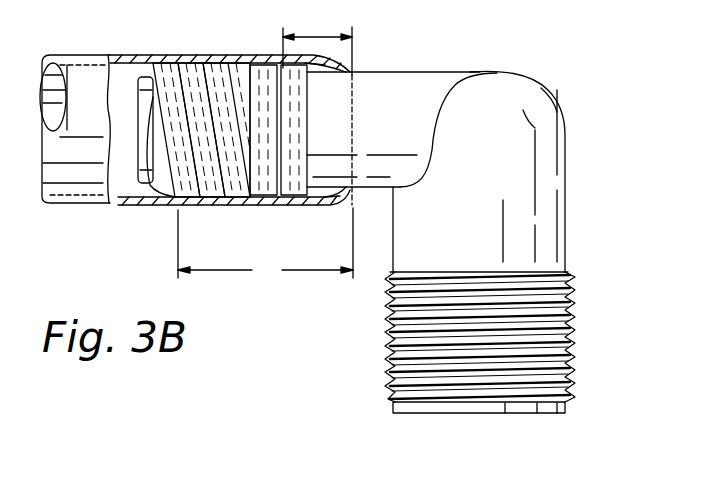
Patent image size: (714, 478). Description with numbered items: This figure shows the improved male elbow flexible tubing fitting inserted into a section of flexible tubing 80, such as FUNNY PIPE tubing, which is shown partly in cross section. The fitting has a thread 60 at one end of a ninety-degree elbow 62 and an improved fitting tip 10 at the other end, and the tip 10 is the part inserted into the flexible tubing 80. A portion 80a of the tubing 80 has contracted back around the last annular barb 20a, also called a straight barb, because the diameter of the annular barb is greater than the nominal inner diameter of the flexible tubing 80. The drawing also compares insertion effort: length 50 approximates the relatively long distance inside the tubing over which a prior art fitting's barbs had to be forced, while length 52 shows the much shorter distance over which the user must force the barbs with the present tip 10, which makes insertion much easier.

The fitting tip 10 is at (128, 88).
The last annular barb 20a is at (293, 97).
The length 50 is at (265, 246).
The length 52 is at (312, 30).
The thread 60 is at (572, 317).
The 90° elbow 62 is at (518, 130).
The flexible tubing 80 is at (135, 203).
The portion of the tubing 80a is at (333, 205).